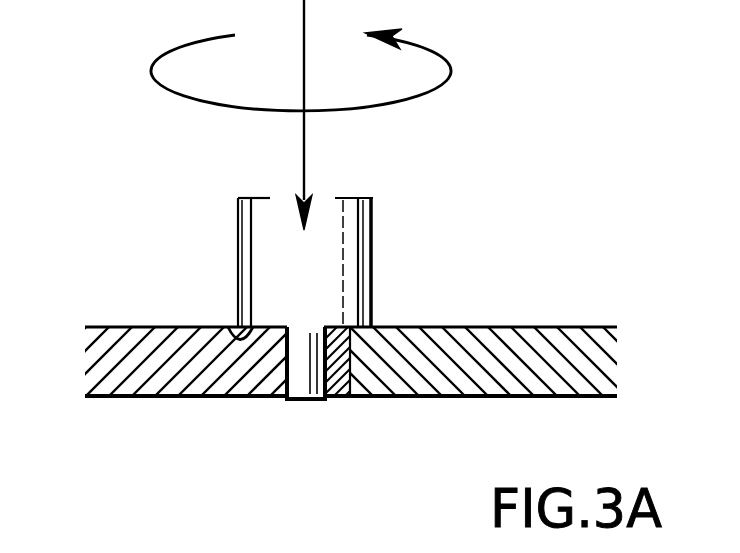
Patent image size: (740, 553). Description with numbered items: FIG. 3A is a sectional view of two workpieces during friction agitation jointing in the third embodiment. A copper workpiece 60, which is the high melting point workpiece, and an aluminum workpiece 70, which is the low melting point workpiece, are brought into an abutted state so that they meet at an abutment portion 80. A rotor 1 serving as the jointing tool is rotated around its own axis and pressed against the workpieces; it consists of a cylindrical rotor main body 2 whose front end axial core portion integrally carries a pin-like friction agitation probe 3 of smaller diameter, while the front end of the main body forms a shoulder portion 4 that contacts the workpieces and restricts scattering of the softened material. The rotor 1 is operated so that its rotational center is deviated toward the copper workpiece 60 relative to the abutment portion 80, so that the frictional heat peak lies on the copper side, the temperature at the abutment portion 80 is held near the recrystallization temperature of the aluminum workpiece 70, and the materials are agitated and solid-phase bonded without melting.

The rotor 1 is at (372, 225).
The cylindrical rotor main body 2 is at (347, 262).
The friction agitation probe 3 is at (268, 395).
The shoulder portion 4 is at (228, 330).
The copper workpiece 60 is at (122, 338).
The aluminum workpiece 70 is at (577, 327).
The abutment portion 80 is at (336, 388).